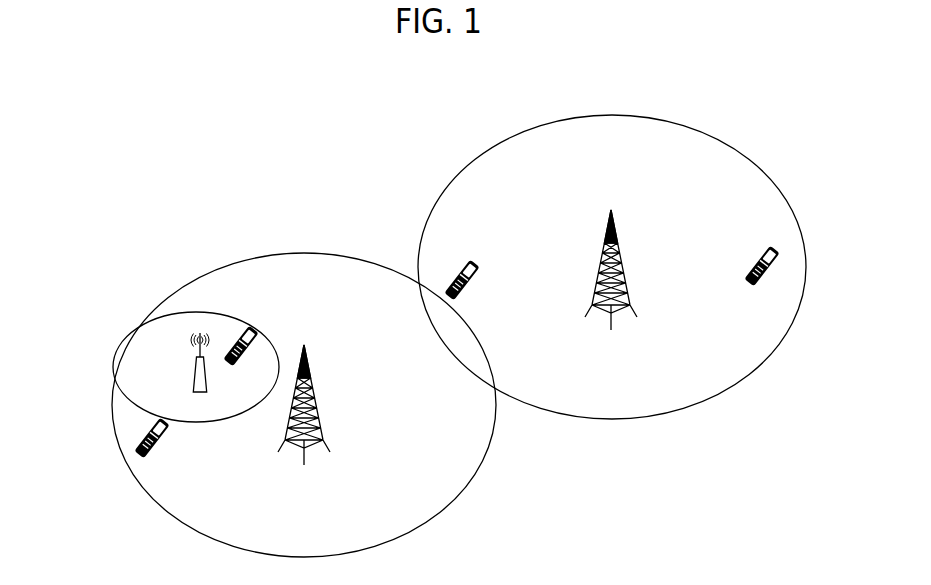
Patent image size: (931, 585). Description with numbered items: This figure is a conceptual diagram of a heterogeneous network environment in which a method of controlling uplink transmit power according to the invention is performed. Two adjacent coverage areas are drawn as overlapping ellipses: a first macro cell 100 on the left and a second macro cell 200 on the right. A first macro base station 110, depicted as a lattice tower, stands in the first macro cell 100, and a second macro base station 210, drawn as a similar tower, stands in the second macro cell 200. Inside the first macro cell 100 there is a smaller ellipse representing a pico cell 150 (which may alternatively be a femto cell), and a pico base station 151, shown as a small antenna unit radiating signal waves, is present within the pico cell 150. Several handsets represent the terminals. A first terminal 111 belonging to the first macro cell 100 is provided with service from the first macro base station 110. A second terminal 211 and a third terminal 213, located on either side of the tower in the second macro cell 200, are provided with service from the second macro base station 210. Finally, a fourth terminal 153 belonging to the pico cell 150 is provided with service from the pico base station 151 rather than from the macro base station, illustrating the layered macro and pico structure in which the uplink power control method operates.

The first macro cell 100 is at (302, 253).
The first macro base station 110 is at (320, 412).
The first terminal 111 is at (143, 437).
The pico cell 150 is at (200, 312).
The pico base station 151 is at (193, 370).
The fourth terminal 153 is at (257, 323).
The second macro cell 200 is at (605, 115).
The second macro base station 210 is at (626, 270).
The second terminal 211 is at (465, 260).
The third terminal 213 is at (755, 248).